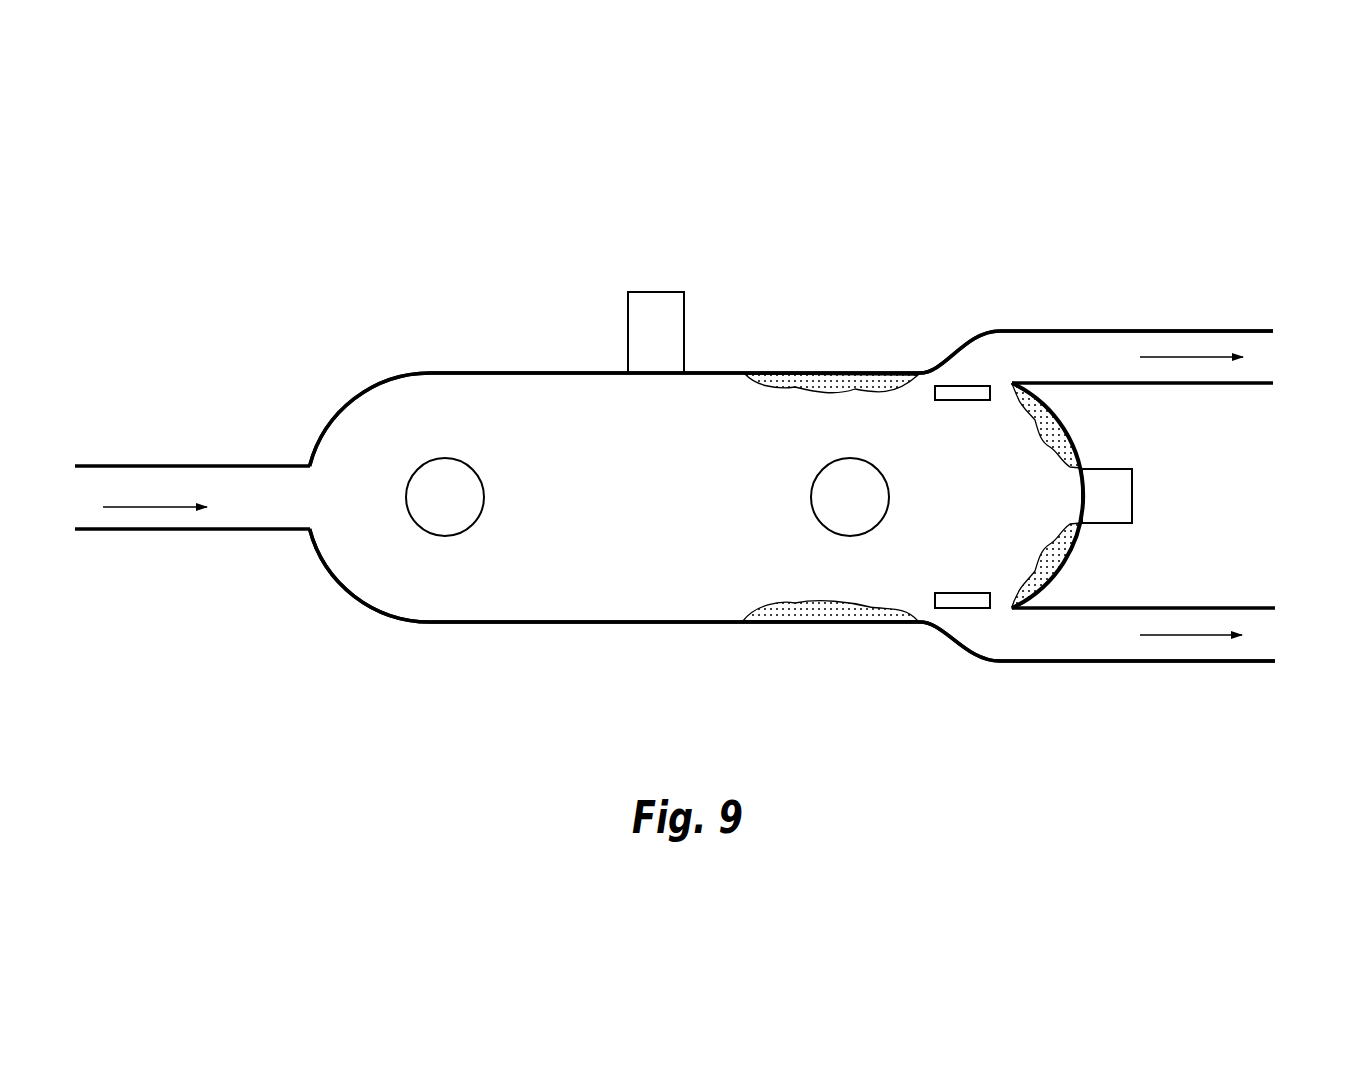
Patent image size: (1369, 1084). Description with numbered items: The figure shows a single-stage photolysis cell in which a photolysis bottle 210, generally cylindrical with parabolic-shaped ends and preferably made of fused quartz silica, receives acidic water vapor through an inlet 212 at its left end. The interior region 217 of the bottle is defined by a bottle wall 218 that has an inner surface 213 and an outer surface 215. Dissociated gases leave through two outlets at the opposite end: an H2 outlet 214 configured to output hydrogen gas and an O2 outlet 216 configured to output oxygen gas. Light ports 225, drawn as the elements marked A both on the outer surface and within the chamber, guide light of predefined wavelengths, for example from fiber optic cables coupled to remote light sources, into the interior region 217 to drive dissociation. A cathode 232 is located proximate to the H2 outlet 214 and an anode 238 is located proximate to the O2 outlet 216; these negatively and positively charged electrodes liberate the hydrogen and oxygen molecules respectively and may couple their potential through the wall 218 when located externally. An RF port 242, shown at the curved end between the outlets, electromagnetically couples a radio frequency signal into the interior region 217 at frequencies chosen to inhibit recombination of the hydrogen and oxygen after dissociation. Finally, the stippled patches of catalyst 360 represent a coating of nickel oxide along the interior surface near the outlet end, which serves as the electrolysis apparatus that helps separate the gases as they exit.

The photolysis bottle 210 is at (742, 319).
The inlet 212 is at (173, 531).
The inner surface 213 is at (497, 622).
The H2 outlet 214 is at (1223, 330).
The outer surface 215 is at (408, 373).
The O2 outlet 216 is at (1178, 663).
The interior region 217 is at (681, 528).
The bottle wall 218 is at (532, 377).
The light ports 225 is at (638, 290).
The cathode 232 is at (973, 388).
The anode 238 is at (962, 602).
The RF port 242 is at (1133, 482).
The catalyst 360 is at (827, 394).